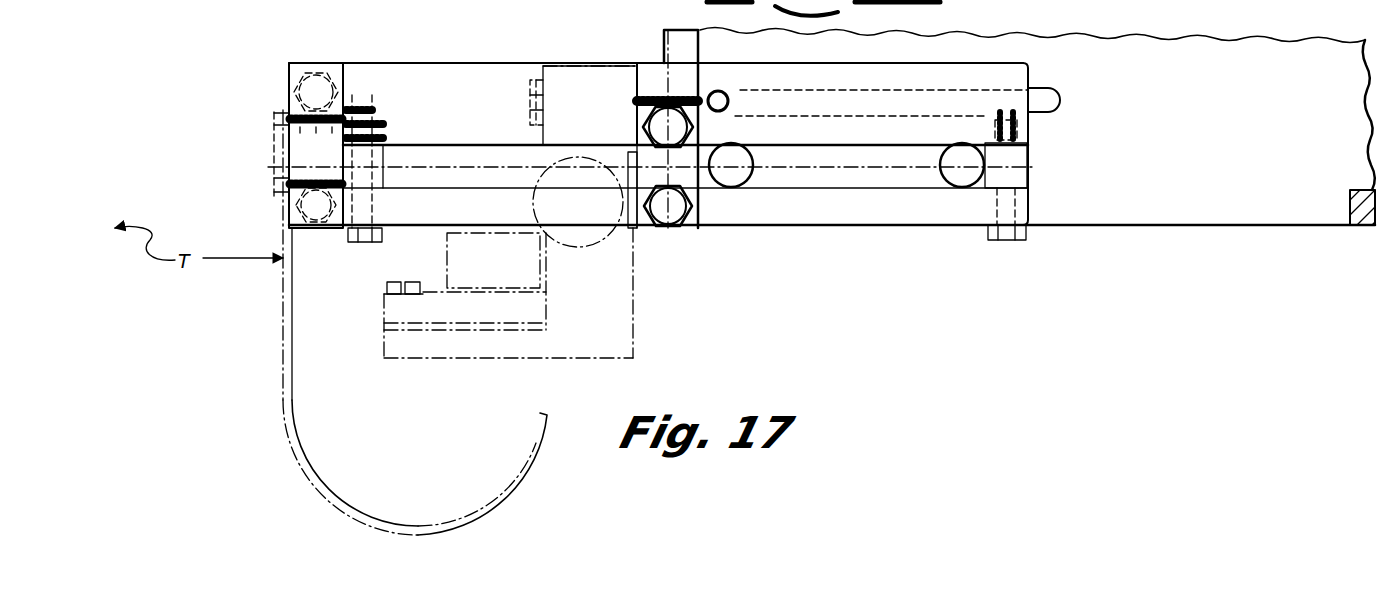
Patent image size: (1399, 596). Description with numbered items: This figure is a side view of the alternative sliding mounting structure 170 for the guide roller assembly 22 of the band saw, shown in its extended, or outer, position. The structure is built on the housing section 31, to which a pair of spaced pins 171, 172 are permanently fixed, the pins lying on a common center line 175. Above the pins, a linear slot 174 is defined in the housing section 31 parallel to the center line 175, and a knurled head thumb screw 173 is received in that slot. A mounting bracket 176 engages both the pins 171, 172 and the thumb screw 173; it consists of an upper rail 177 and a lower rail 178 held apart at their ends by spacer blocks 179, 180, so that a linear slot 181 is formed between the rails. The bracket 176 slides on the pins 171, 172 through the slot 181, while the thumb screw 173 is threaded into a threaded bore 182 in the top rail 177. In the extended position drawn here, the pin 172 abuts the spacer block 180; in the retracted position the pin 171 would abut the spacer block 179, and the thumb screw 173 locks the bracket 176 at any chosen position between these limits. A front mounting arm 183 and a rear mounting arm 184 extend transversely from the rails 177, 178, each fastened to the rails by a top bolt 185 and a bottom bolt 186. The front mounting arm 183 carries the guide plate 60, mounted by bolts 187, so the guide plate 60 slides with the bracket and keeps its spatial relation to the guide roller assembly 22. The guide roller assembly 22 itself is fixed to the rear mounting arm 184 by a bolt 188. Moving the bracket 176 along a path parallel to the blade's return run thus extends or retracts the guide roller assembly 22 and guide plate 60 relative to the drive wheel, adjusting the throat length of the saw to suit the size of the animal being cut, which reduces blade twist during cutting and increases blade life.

The guide roller assembly 22 is at (633, 298).
The housing section 31 is at (1138, 38).
The guide plate 60 is at (283, 305).
The mounting structure 170 is at (497, 62).
The pin 171 is at (733, 180).
The pin 172 is at (958, 174).
The thumb screw 173 is at (727, 100).
The linear slot 174 is at (958, 97).
The center line 175 is at (835, 168).
The mounting bracket 176 is at (447, 78).
The upper rail 177 is at (462, 114).
The lower rail 178 is at (464, 207).
The spacer block 179 is at (388, 182).
The spacer block 180 is at (992, 177).
The linear slot 181 is at (483, 157).
The threaded bore 182 is at (722, 92).
The front mounting arm 183 is at (350, 78).
The rear mounting arm 184 is at (653, 75).
The top bolt 185 is at (316, 75).
The bottom bolt 186 is at (320, 232).
The bolt 187 is at (275, 148).
The bolt 188 is at (543, 66).